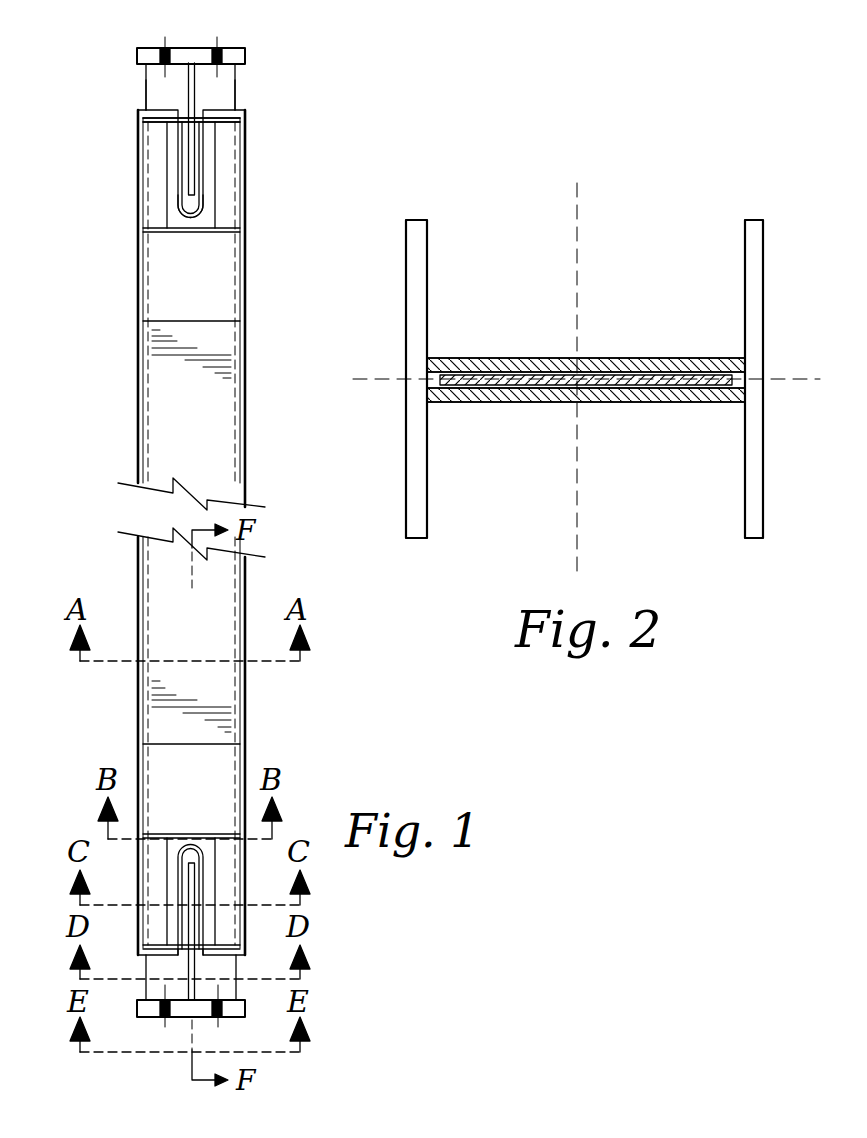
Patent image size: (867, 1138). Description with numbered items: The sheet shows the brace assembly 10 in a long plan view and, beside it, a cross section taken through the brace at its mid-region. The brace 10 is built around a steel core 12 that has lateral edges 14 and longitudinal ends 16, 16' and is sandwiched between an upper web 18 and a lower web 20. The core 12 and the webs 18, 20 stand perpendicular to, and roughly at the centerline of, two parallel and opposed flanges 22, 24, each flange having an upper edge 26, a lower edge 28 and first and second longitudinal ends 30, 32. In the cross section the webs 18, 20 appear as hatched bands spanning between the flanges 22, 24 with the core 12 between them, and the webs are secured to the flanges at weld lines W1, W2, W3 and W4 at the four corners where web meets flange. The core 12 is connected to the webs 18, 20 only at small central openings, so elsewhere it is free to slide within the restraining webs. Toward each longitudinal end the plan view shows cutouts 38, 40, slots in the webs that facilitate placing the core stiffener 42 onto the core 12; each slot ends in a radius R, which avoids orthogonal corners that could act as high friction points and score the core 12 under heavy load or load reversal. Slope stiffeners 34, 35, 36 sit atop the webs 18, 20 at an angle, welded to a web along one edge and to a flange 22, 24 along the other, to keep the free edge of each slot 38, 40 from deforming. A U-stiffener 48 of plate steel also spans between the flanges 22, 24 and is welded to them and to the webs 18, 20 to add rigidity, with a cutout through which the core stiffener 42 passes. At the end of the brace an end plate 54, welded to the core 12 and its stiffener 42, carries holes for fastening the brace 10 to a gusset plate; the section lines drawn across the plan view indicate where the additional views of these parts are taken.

In FIG. 1, the brace assembly 10 is at (365, 75).
In FIG. 1, the core 12 is at (233, 100).
In FIG. 2, the core 12 is at (763, 385).
In FIG. 2, the lateral edge 14 is at (427, 390).
In FIG. 1, the longitudinal end 16 is at (218, 63).
In FIG. 1, the longitudinal end 16' is at (225, 1039).
In FIG. 2, the upper web 18 is at (655, 357).
In FIG. 2, the lower web 20 is at (630, 402).
In FIG. 2, the flange 22 is at (407, 283).
In FIG. 2, the flange 24 is at (763, 320).
In FIG. 2, the upper edge 26 is at (420, 220).
In FIG. 2, the lower edge 28 is at (413, 540).
In FIG. 1, the first longitudinal end 30 is at (138, 110).
In FIG. 1, the second longitudinal end 32 is at (237, 960).
In FIG. 1, the slope stiffener 34 is at (155, 274).
In FIG. 1, the slope stiffener 35 is at (178, 175).
In FIG. 1, the slope stiffener 36 is at (215, 165).
In FIG. 1, the cutout 38 is at (183, 204).
In FIG. 1, the cutout 40 is at (183, 830).
In FIG. 1, the core stiffener 42 is at (188, 140).
In FIG. 1, the U-stiffener 48 is at (240, 120).
In FIG. 1, the end plate 54 is at (137, 57).
In FIG. 1, the radius R is at (193, 218).
In FIG. 2, the weld line W1 is at (430, 357).
In FIG. 2, the weld line W2 is at (428, 405).
In FIG. 2, the weld line W3 is at (743, 357).
In FIG. 2, the weld line W4 is at (742, 405).